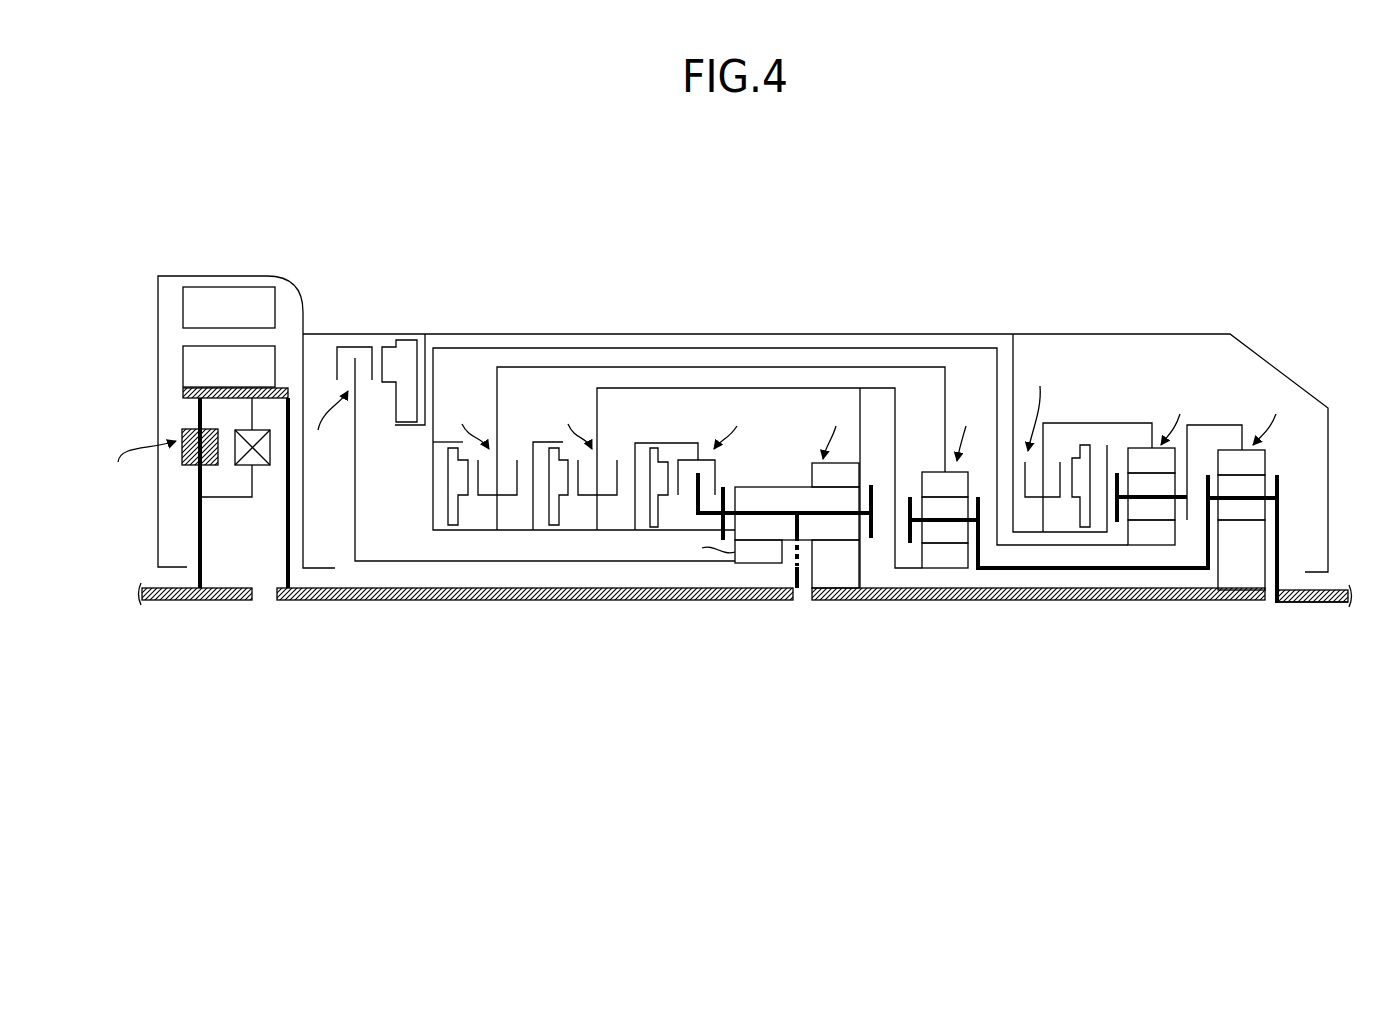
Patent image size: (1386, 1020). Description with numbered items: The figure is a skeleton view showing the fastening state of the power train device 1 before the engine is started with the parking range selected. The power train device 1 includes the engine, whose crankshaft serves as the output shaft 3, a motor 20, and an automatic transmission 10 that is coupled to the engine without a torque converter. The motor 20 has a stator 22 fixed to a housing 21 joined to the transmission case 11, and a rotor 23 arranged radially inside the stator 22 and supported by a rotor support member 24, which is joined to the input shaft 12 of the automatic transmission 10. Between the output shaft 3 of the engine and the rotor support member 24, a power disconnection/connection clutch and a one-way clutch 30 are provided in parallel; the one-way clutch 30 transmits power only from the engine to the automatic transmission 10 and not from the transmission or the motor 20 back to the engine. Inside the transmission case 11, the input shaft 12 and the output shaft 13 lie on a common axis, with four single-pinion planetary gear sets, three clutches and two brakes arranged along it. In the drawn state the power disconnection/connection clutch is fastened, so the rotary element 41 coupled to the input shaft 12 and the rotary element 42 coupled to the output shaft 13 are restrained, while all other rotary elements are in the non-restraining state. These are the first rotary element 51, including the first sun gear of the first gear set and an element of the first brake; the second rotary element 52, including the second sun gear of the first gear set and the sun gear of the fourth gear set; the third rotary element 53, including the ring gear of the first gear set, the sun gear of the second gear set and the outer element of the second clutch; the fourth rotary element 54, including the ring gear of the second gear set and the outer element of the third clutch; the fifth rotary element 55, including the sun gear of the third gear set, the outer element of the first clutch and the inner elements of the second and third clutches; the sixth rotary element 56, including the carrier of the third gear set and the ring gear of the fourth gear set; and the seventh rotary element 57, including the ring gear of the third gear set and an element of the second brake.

The power train device 1 is at (1163, 252).
The output shaft 3 is at (226, 601).
The automatic transmission 10 is at (1203, 332).
The transmission case 11 is at (678, 331).
The input shaft 12 is at (291, 601).
The output shaft 13 is at (1332, 589).
The motor 20 is at (287, 327).
The housing 21 is at (185, 282).
The stator 22 is at (185, 310).
The rotor 23 is at (185, 364).
The rotor support member 24 is at (185, 393).
The one-way clutch 30 is at (276, 452).
The rotary element 41 is at (555, 603).
The rotary element 42 is at (1305, 606).
The first rotary element 51 is at (467, 571).
The second rotary element 52 is at (1040, 603).
The third rotary element 53 is at (793, 385).
The fourth rotary element 54 is at (864, 365).
The fifth rotary element 55 is at (542, 345).
The sixth rotary element 56 is at (1223, 422).
The seventh rotary element 57 is at (1090, 420).